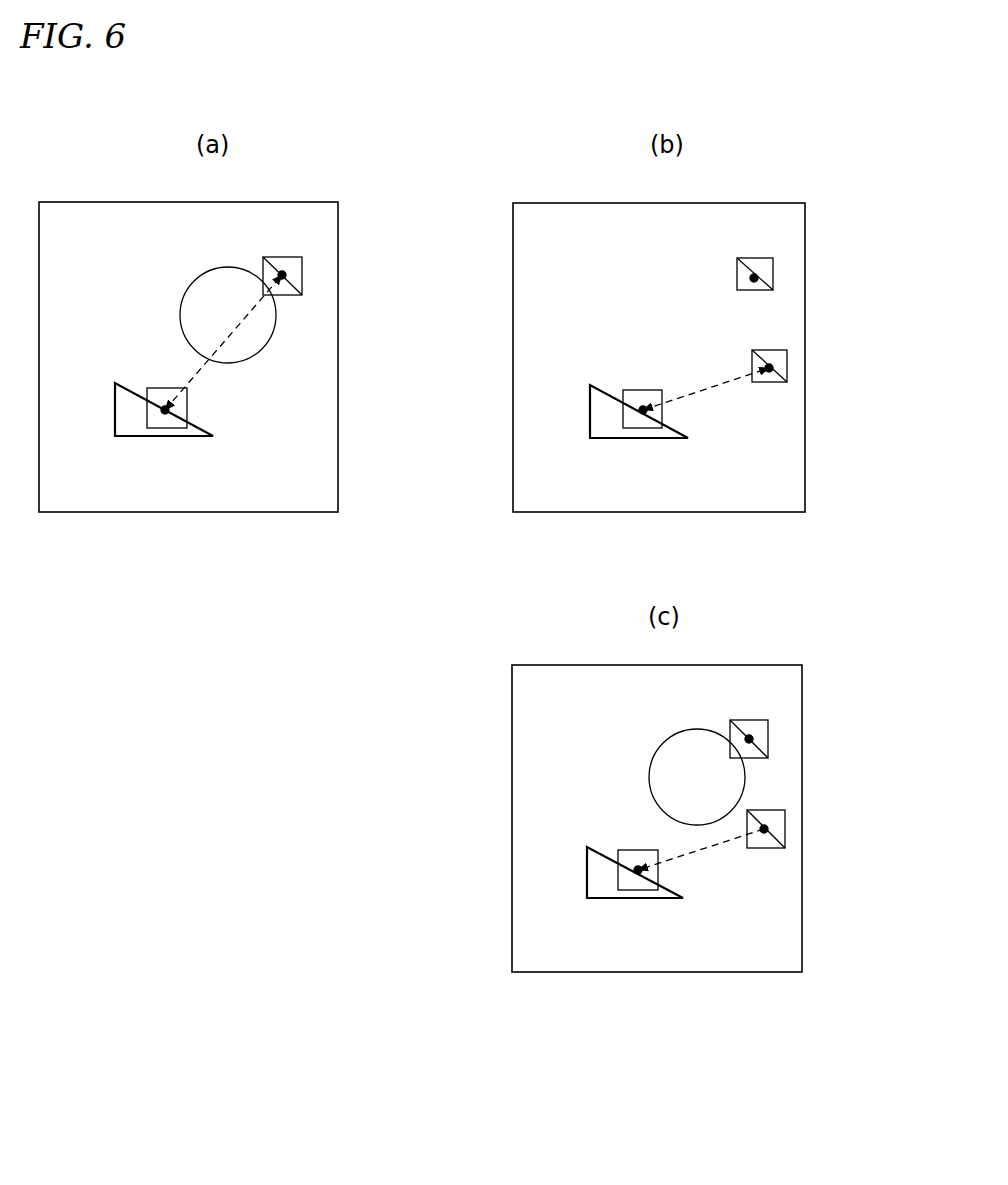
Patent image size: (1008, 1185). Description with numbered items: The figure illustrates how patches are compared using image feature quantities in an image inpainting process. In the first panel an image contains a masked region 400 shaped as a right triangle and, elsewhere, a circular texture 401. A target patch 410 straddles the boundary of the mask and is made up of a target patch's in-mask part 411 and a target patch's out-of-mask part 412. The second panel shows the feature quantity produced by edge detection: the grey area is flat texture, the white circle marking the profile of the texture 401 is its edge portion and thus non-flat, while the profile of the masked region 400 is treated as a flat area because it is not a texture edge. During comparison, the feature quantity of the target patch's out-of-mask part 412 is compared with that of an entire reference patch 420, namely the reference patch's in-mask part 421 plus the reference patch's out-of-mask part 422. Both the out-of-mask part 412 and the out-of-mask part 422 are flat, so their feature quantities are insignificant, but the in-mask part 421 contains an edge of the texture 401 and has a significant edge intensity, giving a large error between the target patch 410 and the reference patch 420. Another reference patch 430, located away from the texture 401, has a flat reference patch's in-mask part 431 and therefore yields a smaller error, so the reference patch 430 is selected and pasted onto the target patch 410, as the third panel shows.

The masked region 400 is at (132, 438).
The circular texture 401 is at (200, 290).
The target patch 410 is at (190, 412).
The target patch's in-mask part 411 is at (172, 424).
The target patch's out-of-mask part 412 is at (180, 400).
The reference patch 420 is at (822, 695).
The reference patch's in-mask part 421 is at (302, 296).
The reference patch's out-of-mask part 422 is at (298, 262).
The reference patch 430 is at (790, 363).
The reference patch's in-mask part 431 is at (771, 381).